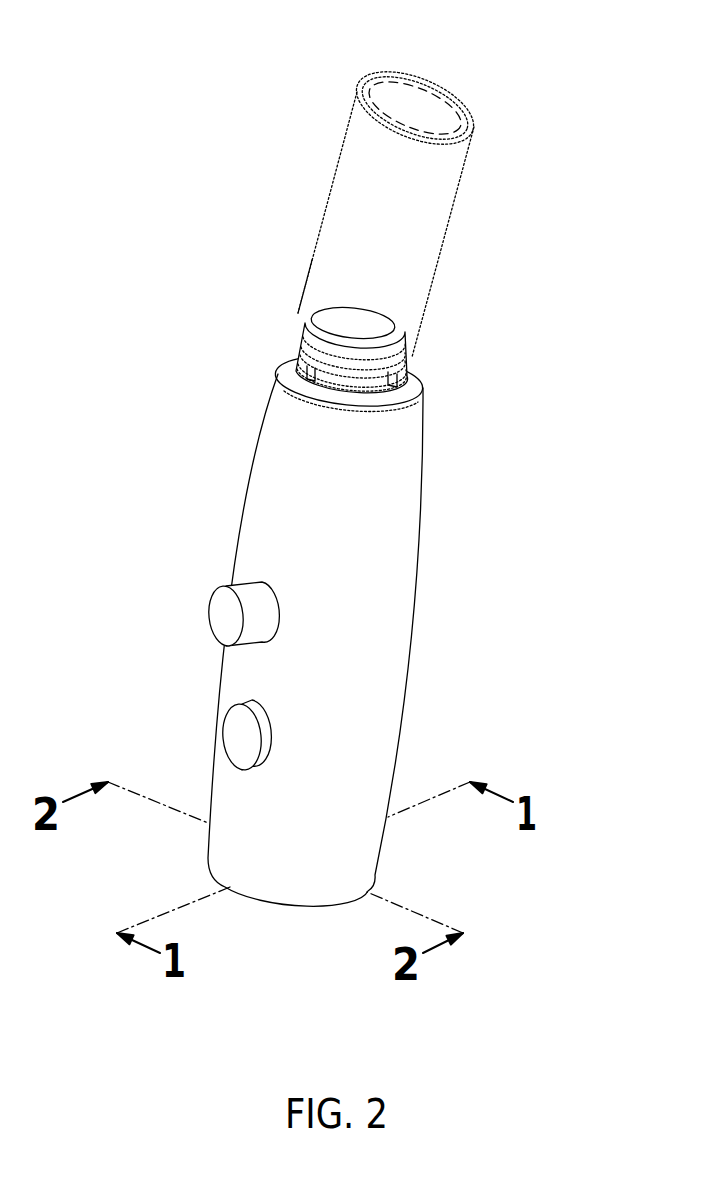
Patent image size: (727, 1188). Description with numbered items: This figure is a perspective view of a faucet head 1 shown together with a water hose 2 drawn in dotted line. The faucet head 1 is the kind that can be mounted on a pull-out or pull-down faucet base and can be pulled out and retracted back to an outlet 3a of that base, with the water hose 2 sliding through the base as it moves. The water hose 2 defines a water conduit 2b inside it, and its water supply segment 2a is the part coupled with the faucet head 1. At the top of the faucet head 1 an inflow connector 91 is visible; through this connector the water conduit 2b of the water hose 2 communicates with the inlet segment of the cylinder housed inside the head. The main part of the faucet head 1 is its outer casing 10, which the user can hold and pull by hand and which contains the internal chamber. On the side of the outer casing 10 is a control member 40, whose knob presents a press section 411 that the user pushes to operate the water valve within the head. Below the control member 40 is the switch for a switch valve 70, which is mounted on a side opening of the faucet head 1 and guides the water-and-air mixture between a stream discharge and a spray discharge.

The faucet head 1 is at (321, 599).
The water hose 2 is at (382, 184).
The water supply segment 2a is at (298, 312).
The water conduit 2b is at (421, 109).
The outlet 3a is at (404, 358).
The outer casing 10 is at (422, 550).
The control member 40 is at (186, 619).
The press section 411 is at (217, 610).
The switch valve 70 is at (220, 757).
The inflow connector 91 is at (423, 344).